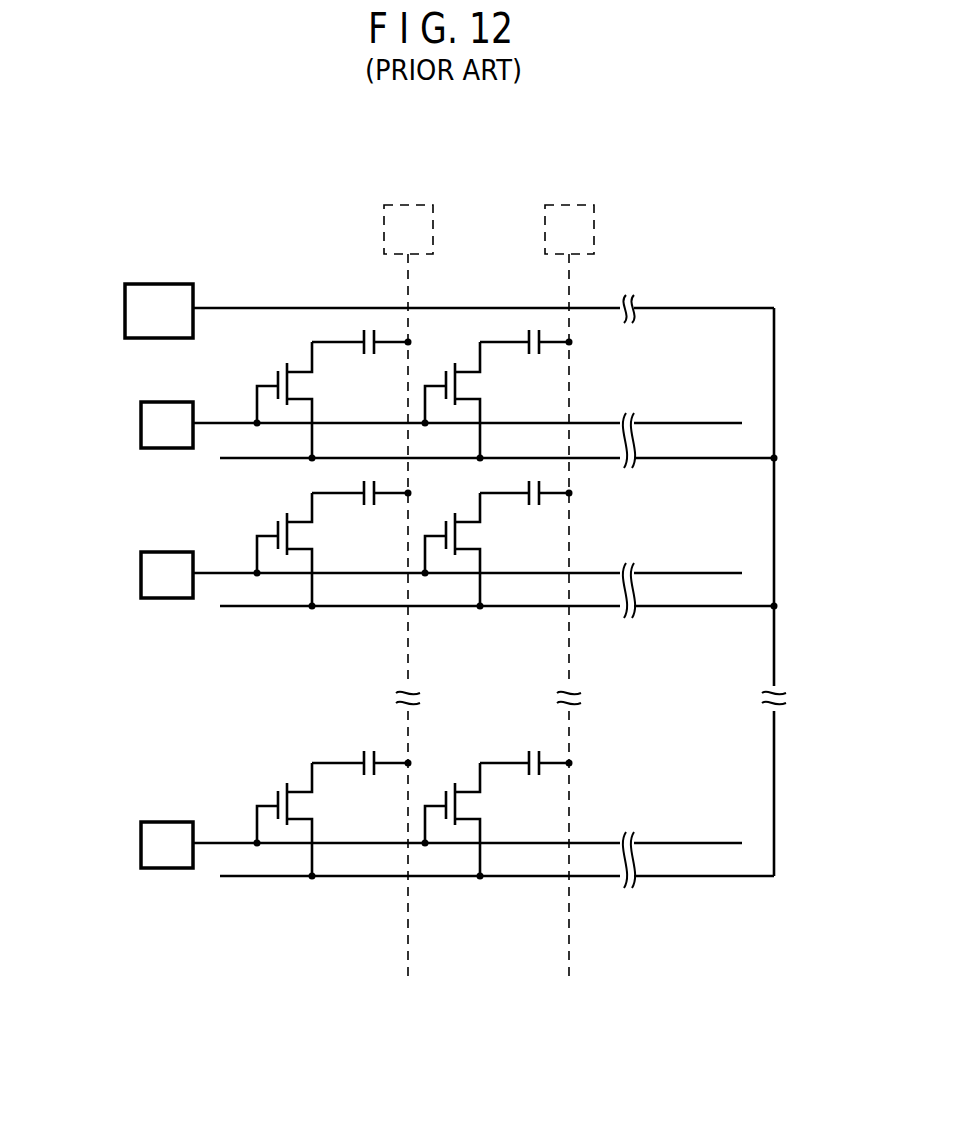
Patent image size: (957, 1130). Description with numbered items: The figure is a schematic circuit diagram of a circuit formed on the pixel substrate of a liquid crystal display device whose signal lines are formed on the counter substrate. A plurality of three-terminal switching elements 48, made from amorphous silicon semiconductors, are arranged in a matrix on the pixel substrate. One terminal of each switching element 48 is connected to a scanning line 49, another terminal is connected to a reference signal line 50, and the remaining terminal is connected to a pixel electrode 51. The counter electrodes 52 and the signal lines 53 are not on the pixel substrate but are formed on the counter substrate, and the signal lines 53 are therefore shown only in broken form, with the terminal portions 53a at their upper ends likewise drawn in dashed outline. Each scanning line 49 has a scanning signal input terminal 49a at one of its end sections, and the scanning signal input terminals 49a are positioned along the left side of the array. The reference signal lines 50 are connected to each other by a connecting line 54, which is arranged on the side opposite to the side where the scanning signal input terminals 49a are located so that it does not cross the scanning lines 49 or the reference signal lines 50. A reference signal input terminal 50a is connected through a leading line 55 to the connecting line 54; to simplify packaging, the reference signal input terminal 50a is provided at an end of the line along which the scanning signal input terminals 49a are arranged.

The three-terminal switching element 48 is at (276, 380).
The scanning line 49 is at (218, 422).
The scanning signal input terminal 49a is at (139, 421).
The reference signal line 50 is at (283, 460).
The reference signal input terminal 50a is at (153, 283).
The pixel electrode 51 is at (360, 338).
The counter electrode 52 is at (378, 332).
The signal line 53 is at (412, 281).
The common electrode terminal 53a is at (408, 205).
The connecting line 54 is at (776, 521).
The leading line 55 is at (732, 308).